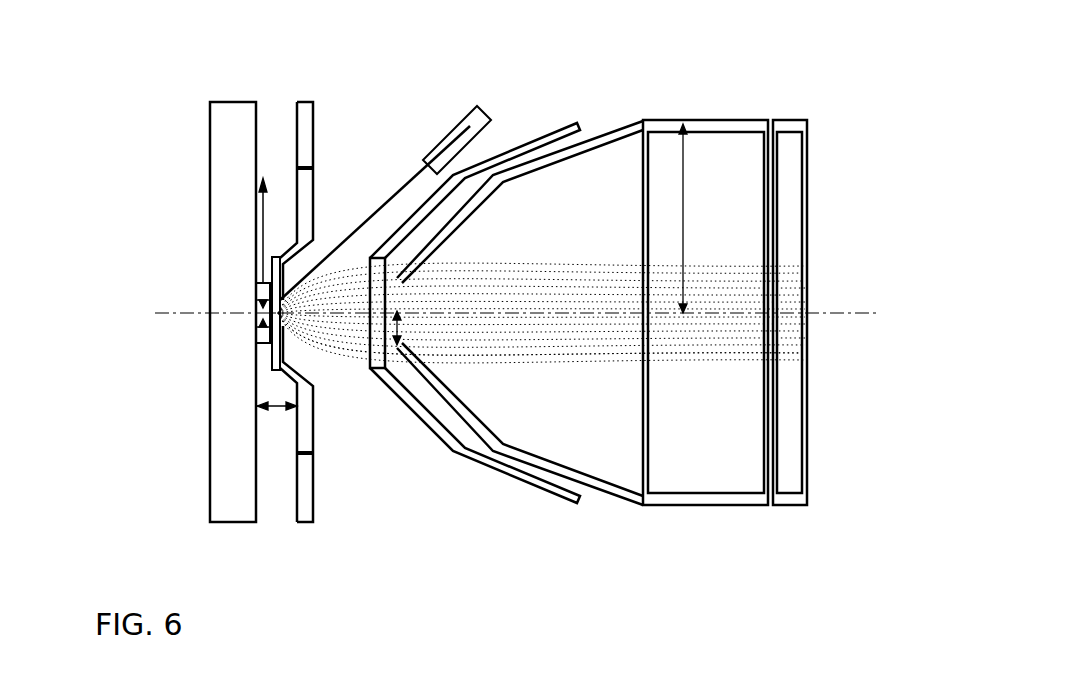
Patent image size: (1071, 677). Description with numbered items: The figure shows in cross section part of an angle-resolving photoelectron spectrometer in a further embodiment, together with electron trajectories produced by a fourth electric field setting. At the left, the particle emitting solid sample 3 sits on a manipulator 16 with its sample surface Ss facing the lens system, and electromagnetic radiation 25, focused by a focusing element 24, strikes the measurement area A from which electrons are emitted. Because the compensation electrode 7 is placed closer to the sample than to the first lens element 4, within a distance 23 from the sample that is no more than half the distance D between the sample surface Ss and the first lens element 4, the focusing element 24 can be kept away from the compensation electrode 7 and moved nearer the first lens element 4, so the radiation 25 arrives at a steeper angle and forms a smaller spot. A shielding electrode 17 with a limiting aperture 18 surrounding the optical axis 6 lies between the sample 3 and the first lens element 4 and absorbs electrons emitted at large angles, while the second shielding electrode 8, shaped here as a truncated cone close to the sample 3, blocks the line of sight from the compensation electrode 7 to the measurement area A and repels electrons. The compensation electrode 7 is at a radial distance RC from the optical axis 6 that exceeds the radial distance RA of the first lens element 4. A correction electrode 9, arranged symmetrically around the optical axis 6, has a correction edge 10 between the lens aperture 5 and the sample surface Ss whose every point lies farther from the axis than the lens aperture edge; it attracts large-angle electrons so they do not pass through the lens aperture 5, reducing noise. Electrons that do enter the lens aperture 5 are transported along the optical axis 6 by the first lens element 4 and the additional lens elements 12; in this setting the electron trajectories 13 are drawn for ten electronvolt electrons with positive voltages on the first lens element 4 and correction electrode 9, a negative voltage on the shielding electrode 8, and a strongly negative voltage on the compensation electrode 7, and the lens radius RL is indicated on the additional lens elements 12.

The particle emitting solid sample 3 is at (262, 290).
The first lens element 4 is at (608, 128).
The lens aperture 5 is at (442, 267).
The optical axis 6 is at (848, 306).
The compensation electrode 7 is at (314, 133).
The second shielding electrode 8 is at (305, 440).
The correction electrode 9 is at (522, 140).
The correction edge 10 is at (368, 377).
The additional lens elements 12 is at (787, 125).
The electron trajectory 13 is at (505, 343).
The manipulator 16 is at (228, 212).
The shielding electrode 17 is at (270, 372).
The limiting aperture 18 is at (268, 256).
The distance 23 is at (283, 406).
The focusing element 24 is at (483, 105).
The electromagnetic radiation 25 is at (377, 210).
The measurement area A is at (257, 315).
The distance between sample surface and first lens element D is at (353, 363).
The distance between first lens element and optical axis RA is at (403, 329).
The distance from compensation electrode to optical axis RC is at (263, 233).
The lens radius RL is at (683, 187).
The sample surface Ss is at (280, 330).